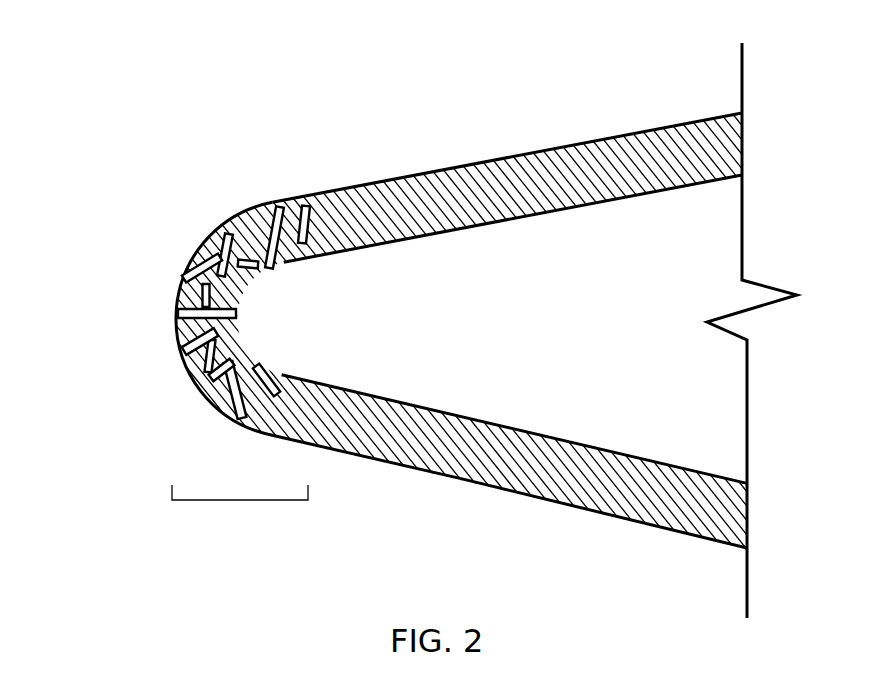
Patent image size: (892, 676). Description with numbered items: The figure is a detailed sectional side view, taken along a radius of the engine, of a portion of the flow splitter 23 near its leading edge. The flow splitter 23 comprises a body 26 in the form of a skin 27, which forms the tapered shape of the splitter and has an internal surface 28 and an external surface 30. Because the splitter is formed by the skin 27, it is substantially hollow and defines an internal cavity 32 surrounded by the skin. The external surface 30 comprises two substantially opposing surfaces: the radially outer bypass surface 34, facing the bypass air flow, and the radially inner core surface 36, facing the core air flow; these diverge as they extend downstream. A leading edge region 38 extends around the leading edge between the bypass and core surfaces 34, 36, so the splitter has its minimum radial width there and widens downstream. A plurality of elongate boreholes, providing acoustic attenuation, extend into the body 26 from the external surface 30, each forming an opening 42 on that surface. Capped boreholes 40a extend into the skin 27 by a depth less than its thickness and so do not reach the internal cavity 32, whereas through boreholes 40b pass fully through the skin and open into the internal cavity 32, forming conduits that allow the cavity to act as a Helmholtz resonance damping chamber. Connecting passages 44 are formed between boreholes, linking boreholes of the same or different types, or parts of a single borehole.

The flow splitter 23 is at (142, 128).
The body 26 is at (652, 152).
The skin 27 is at (460, 465).
The internal surface 28 is at (404, 402).
The external surface 30 is at (358, 456).
The internal cavity 32 is at (728, 425).
The bypass surface 34 is at (556, 148).
The core surface 36 is at (598, 512).
The leading edge region 38 is at (238, 502).
The capped boreholes 40a is at (307, 208).
The through boreholes 40b is at (276, 205).
The opening 42 is at (212, 242).
The connecting passages 44 is at (185, 292).